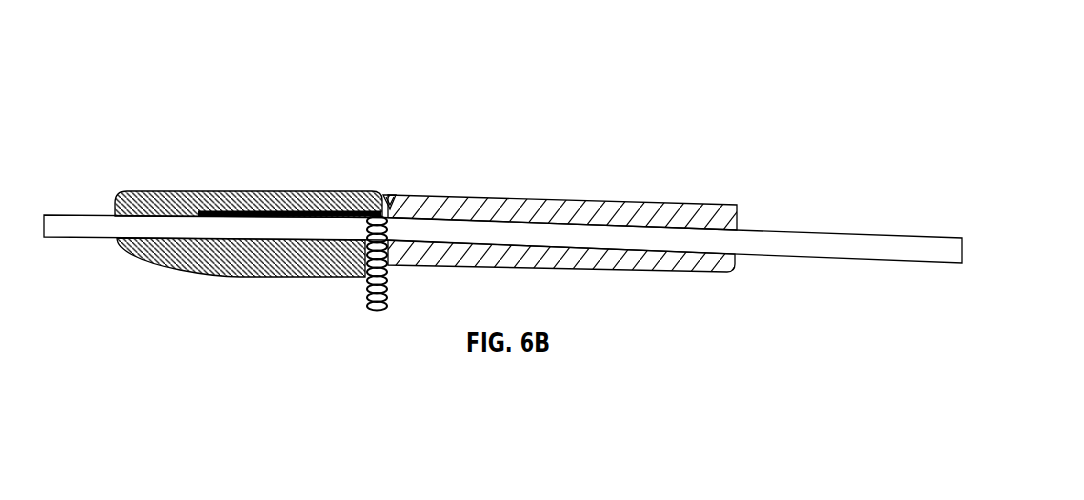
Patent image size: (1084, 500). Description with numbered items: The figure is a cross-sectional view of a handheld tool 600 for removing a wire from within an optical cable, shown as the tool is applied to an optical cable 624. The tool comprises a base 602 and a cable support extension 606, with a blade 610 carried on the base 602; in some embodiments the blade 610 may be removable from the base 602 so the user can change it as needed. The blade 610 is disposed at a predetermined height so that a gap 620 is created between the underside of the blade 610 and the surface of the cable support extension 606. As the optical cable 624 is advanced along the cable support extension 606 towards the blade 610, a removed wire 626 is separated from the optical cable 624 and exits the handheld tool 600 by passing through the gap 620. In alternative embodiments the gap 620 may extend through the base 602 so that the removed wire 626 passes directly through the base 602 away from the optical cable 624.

The handheld tool 600 is at (571, 148).
The base 602 is at (200, 190).
The cable support extension 606 is at (608, 203).
The blade 610 is at (322, 217).
The gap 620 is at (391, 205).
The optical cable 624 is at (765, 243).
The removed wire 626 is at (383, 310).